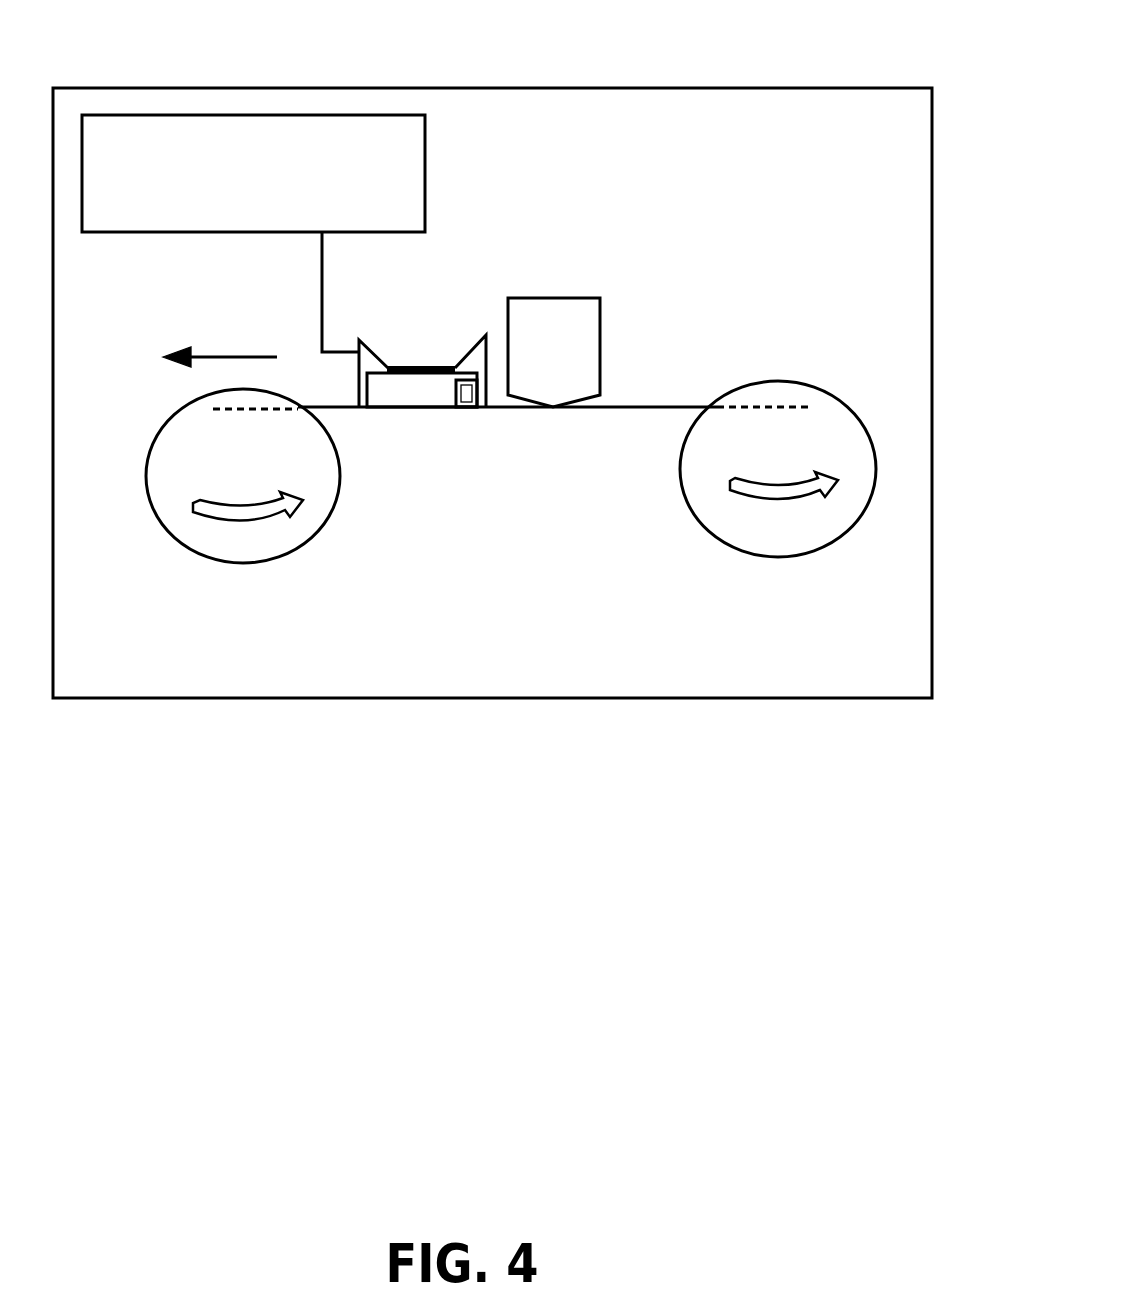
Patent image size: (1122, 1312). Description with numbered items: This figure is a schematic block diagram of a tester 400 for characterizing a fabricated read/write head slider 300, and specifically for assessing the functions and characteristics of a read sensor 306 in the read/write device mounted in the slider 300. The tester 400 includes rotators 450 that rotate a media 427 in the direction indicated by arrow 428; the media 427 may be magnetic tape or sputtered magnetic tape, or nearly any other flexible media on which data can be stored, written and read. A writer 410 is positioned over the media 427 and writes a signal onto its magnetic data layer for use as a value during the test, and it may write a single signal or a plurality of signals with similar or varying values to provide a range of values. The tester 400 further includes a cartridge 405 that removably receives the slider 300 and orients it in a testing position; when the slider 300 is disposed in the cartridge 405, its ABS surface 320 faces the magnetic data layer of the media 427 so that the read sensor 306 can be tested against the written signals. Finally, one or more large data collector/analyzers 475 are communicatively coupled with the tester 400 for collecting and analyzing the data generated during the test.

The tester 400 is at (692, 88).
The data collector/analyzer 475 is at (228, 205).
The media 427 is at (648, 406).
The rotators 450 is at (162, 485).
The arrow 428 is at (222, 354).
The cartridge 405 is at (370, 362).
The ABS surface 320 is at (403, 407).
The slider 300 is at (408, 390).
The read sensor 306 is at (465, 393).
The writer 410 is at (557, 293).